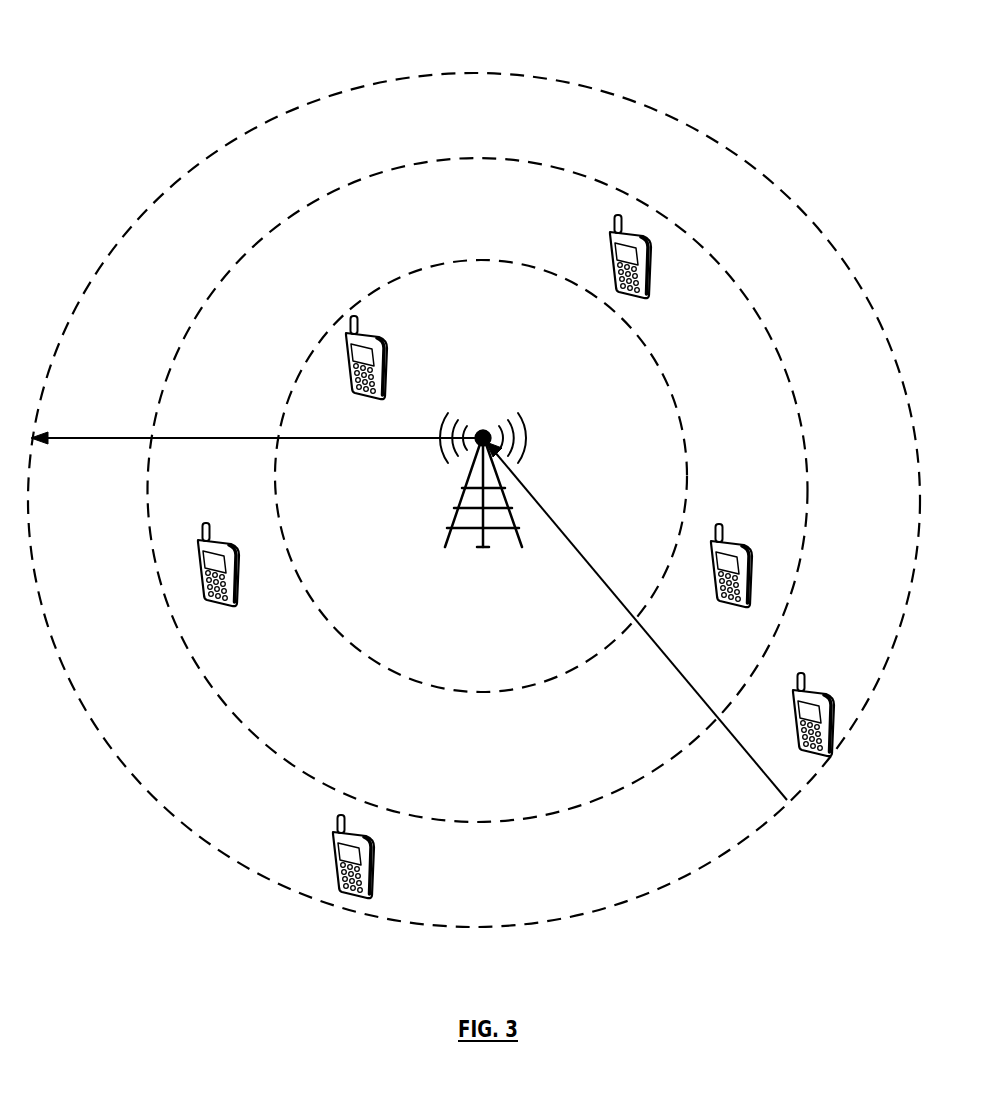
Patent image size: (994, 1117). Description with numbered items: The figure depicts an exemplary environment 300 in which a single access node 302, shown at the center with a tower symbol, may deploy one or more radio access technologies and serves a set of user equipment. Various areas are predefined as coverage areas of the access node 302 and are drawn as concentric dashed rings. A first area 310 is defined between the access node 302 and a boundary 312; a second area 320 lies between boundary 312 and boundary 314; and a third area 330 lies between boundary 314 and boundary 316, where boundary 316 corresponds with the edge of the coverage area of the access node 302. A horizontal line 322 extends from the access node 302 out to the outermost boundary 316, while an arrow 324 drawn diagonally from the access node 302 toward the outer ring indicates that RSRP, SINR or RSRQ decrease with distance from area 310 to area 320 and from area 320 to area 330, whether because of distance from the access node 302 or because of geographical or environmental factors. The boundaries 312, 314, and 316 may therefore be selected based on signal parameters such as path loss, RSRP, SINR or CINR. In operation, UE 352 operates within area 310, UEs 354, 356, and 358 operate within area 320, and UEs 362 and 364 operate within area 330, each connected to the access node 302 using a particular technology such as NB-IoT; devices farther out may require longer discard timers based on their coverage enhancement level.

The environment 300 is at (580, 54).
The access node 302 is at (483, 469).
The first area 310 is at (481, 476).
The boundary 312 is at (560, 277).
The boundary 314 is at (798, 412).
The boundary 316 is at (918, 487).
The second area 320 is at (478, 490).
The first radius 322 is at (373, 442).
The arrow 324 is at (688, 685).
The third area 330 is at (474, 500).
The UE 352 is at (379, 336).
The UE 354 is at (608, 233).
The UE 356 is at (719, 600).
The UE 358 is at (232, 602).
The UE 362 is at (335, 839).
The UE 364 is at (800, 670).